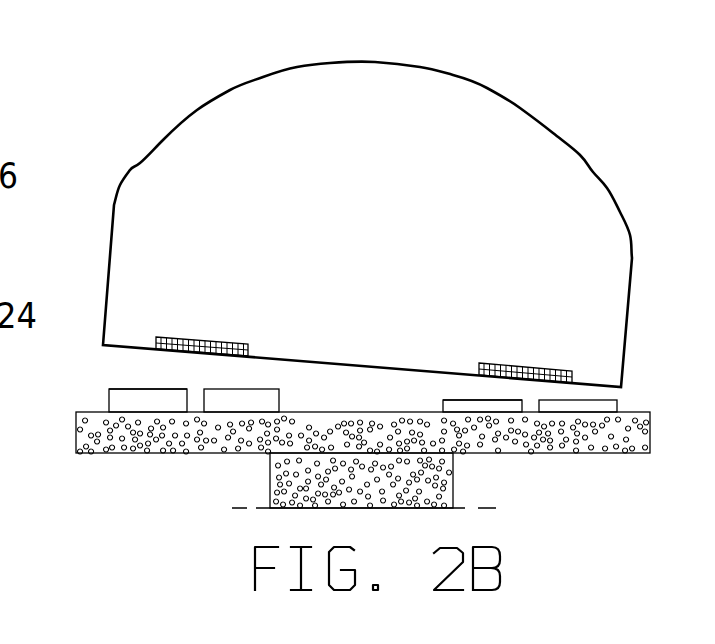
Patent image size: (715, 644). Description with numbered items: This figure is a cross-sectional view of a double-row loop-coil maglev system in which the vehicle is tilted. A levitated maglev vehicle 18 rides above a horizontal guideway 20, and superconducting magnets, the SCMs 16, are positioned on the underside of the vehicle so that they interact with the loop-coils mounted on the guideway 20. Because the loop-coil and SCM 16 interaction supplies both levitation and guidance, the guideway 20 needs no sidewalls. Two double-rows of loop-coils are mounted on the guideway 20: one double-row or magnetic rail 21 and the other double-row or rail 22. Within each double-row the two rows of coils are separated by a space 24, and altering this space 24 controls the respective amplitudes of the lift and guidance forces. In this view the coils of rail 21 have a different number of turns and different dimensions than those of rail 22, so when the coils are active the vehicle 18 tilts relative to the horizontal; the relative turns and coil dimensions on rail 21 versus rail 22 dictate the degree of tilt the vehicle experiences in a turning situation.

The superconducting magnets (SCMs) 16 is at (232, 345).
The levitated maglev vehicle 18 is at (593, 172).
The horizontal guideway 20 is at (75, 437).
The double-row or magnetic rail 21 is at (239, 398).
The other double-row or rail 22 is at (573, 403).
The space between the two rows of loop-coils 24 is at (195, 395).